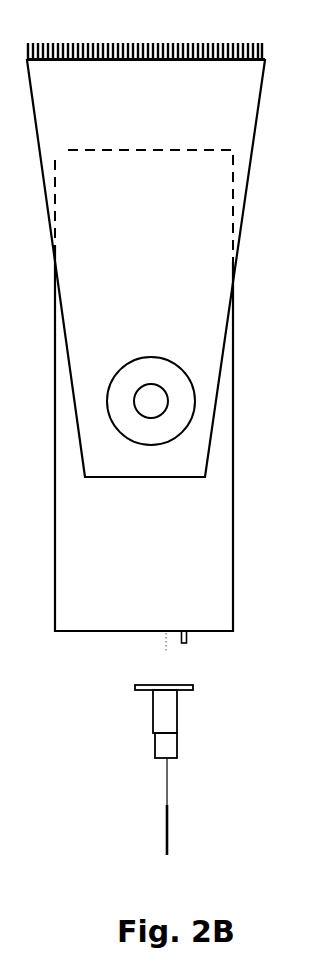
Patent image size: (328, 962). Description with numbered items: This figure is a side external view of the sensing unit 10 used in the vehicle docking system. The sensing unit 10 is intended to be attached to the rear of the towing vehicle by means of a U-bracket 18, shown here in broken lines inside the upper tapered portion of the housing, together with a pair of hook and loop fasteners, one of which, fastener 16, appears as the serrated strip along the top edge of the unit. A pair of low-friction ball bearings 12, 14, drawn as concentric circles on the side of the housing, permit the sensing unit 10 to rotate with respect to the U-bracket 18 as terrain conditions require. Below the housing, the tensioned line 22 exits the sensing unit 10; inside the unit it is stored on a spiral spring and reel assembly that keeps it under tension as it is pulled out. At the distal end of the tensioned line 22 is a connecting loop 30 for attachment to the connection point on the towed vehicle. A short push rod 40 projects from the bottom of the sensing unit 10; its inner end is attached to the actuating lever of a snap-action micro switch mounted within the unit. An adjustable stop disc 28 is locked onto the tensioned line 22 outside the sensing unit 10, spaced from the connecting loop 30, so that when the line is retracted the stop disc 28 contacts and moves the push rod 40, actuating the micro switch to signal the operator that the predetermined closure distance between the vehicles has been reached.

The sensing unit 10 is at (240, 363).
The low-friction ball bearing 12 is at (112, 366).
The low-friction ball bearing 14 is at (151, 401).
The hook and loop fastener 16 is at (86, 41).
The U-bracket 18 is at (31, 164).
The tensioned line 22 is at (172, 788).
The adjustable stop disc 28 is at (180, 718).
The connecting loop 30 is at (173, 822).
The push rod 40 is at (185, 646).